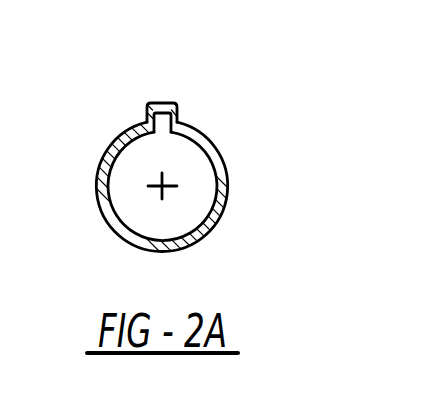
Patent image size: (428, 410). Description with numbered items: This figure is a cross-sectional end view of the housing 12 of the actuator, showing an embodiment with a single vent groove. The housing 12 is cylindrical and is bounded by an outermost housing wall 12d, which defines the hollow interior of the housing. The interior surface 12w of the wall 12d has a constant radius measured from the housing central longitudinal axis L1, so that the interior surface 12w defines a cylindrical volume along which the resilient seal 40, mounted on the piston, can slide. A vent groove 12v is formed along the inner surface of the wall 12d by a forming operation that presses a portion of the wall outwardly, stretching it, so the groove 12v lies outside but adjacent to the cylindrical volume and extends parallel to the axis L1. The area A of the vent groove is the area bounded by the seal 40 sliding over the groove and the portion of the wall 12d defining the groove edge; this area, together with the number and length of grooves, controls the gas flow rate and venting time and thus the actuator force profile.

The housing 12 is at (208, 240).
The interior surface of housing wall 12w is at (114, 228).
The outermost housing wall 12d is at (225, 168).
The vent groove 12v is at (146, 121).
The area of the vent groove A is at (161, 120).
The resilient seal 40 is at (221, 209).
The housing central longitudinal axis L1 is at (159, 184).